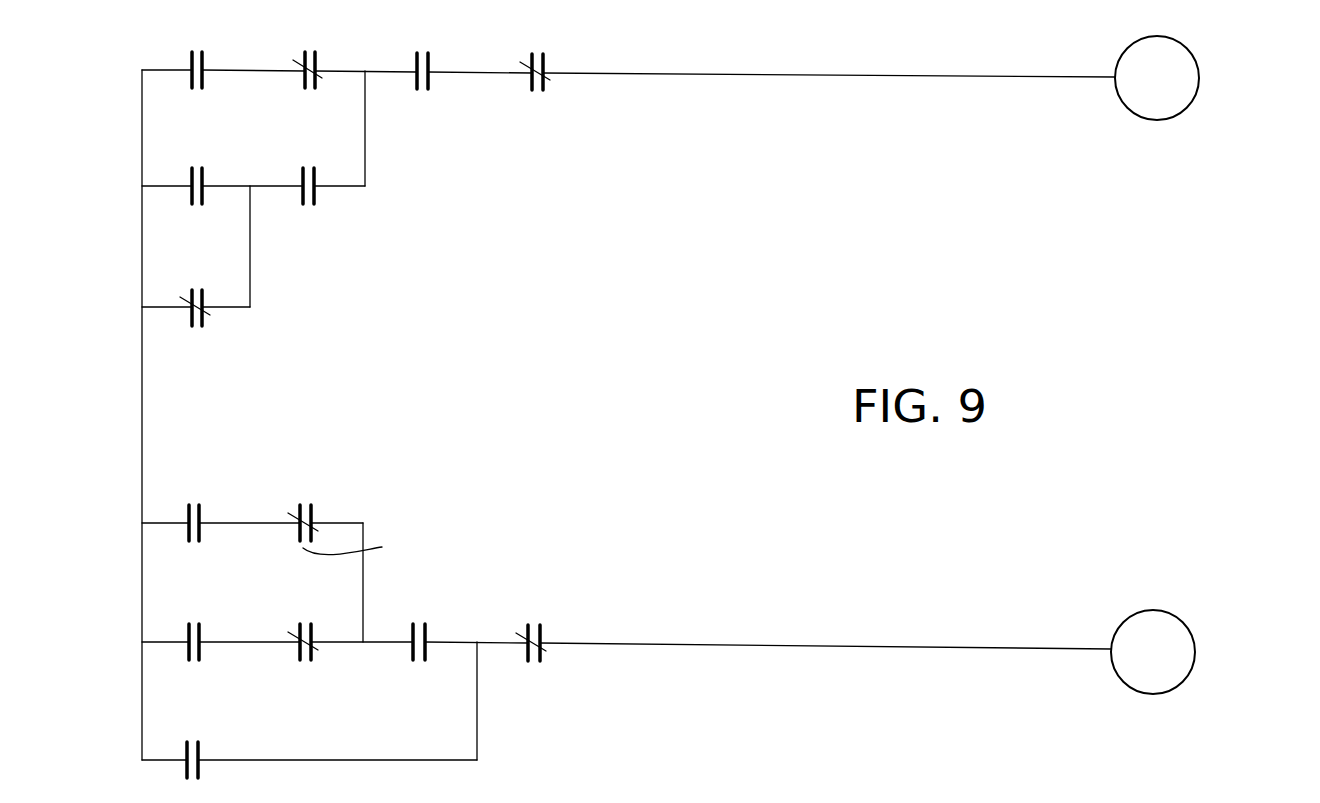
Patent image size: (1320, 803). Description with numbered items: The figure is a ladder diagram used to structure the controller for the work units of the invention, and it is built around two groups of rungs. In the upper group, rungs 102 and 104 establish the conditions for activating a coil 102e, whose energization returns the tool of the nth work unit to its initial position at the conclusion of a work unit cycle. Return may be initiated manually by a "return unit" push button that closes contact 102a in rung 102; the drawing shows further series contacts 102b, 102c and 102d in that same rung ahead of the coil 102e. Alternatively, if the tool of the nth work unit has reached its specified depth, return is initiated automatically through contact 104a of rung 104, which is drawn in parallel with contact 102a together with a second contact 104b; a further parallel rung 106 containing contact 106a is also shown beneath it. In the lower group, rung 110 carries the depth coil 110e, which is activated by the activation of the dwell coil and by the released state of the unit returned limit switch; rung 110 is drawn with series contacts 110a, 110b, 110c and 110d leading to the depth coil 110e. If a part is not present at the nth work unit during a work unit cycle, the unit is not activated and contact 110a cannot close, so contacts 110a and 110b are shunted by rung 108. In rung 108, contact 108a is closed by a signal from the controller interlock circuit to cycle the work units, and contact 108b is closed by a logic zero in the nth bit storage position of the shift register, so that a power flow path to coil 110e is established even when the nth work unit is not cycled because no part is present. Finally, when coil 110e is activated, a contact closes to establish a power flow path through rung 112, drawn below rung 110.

The rung 102 is at (763, 72).
The contact 102a is at (197, 51).
The auto selector switch contact 102b is at (311, 51).
The auto/manual control contact 102c is at (424, 52).
The unit returned limit switch contact 102d is at (538, 53).
The coil 102e is at (1118, 56).
The rung 104 is at (265, 185).
The contact 104a is at (205, 168).
The auto selector switch contact 104b is at (317, 184).
The emergency branch rung 106 is at (157, 307).
The emergency contact 106a is at (224, 276).
The rung 108 is at (255, 522).
The contact 108a is at (193, 505).
The contact 108b is at (315, 516).
The rung 110 is at (797, 645).
The contact 110a is at (197, 625).
The contact 110b is at (307, 623).
The auto selector switch contact 110c is at (432, 600).
The reset depth interlock contact 110d is at (533, 623).
The depth coil 110e is at (1157, 610).
The rung 112 is at (190, 741).